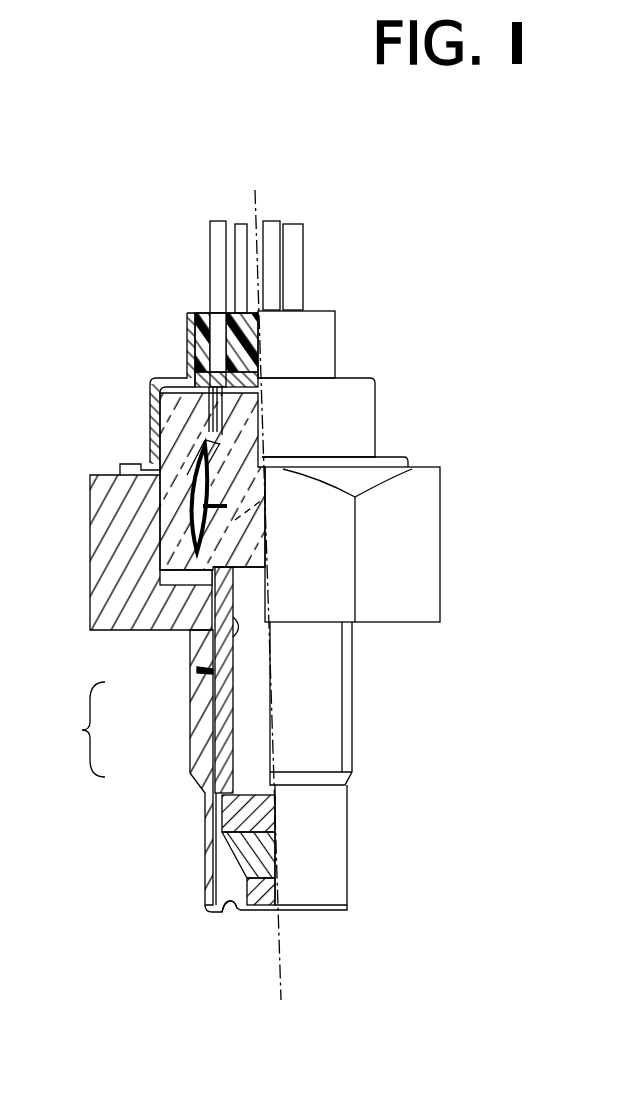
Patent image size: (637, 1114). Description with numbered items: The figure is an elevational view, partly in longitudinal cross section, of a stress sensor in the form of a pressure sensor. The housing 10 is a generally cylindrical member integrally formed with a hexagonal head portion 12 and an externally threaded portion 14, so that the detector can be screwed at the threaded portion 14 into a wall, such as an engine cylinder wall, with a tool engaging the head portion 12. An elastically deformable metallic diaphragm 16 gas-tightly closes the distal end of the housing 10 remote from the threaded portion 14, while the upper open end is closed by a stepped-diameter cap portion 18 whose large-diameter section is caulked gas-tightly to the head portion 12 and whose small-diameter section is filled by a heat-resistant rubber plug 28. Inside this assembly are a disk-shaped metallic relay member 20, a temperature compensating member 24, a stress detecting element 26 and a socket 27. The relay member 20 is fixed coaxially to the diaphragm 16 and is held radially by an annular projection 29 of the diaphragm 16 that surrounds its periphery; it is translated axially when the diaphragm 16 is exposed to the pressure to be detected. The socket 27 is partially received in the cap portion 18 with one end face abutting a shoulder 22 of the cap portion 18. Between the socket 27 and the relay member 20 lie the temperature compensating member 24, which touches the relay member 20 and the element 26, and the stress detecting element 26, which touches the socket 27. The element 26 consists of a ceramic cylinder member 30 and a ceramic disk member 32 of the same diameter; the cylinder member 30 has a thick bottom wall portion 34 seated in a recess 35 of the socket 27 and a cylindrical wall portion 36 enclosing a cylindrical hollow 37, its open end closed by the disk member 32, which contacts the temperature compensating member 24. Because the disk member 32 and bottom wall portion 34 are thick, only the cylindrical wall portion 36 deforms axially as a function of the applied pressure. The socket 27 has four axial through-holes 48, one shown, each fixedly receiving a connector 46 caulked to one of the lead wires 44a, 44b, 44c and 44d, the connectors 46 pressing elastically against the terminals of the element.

The housing 10 is at (458, 528).
The hexagonal head portion 12 is at (422, 605).
The externally threaded portion 14 is at (352, 738).
The metallic diaphragm 16 is at (311, 910).
The cap portion 18 is at (366, 418).
The relay member 20 is at (260, 898).
The shoulder 22 is at (165, 382).
The temperature compensating member 24 is at (250, 858).
The stress detecting element 26 is at (73, 729).
The socket 27 is at (168, 422).
The heat-resistant rubber plug 28 is at (193, 313).
The annular projection 29 is at (230, 910).
The cylinder member 30 is at (200, 672).
The disk member 32 is at (224, 812).
The bottom wall portion 34 is at (258, 548).
The recess 35 is at (250, 514).
The cylindrical wall portion 36 is at (230, 692).
The cylindrical hollow 37 is at (232, 640).
The lead wire 44a is at (297, 240).
The lead wire 44b is at (273, 222).
The lead wire 44c is at (244, 226).
The lead wire 44d is at (208, 235).
The connector 46 is at (195, 480).
The through-hole 48 is at (213, 472).